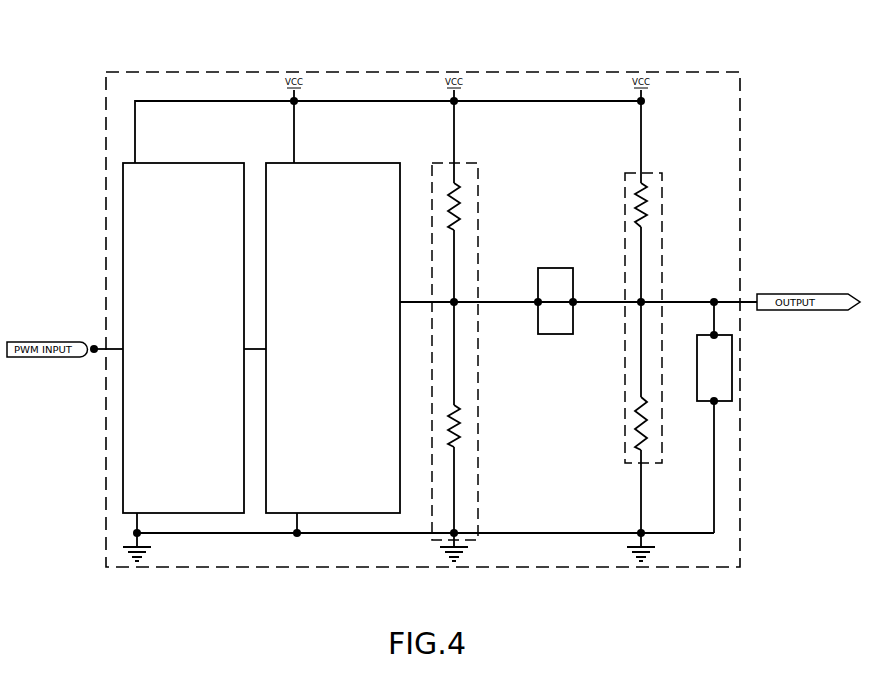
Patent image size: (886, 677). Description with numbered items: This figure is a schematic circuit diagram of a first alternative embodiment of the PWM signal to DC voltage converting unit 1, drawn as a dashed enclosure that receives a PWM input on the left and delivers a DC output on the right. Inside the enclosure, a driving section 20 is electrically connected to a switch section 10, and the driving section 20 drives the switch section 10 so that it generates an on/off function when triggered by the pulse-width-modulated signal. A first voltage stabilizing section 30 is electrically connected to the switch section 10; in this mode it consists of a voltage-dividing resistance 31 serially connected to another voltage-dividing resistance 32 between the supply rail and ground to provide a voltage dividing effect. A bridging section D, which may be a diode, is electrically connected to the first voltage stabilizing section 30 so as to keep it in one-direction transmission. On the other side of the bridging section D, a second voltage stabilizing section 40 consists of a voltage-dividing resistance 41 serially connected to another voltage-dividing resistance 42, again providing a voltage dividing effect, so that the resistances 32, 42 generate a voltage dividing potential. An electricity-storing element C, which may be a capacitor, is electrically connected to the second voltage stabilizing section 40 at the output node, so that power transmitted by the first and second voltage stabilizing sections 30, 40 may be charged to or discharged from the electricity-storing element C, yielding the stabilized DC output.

The PWM signal to DC voltage converting unit 1 is at (743, 160).
The switch section 10 is at (312, 163).
The driving section 20 is at (190, 163).
The first voltage stabilizing section 30 is at (458, 210).
The voltage-dividing resistance 31 is at (463, 203).
The voltage-dividing resistance 32 is at (462, 430).
The second voltage stabilizing section 40 is at (648, 185).
The voltage-dividing resistance 41 is at (647, 195).
The voltage-dividing resistance 42 is at (652, 423).
The electricity-storing element C is at (723, 373).
The bridging section D is at (547, 323).